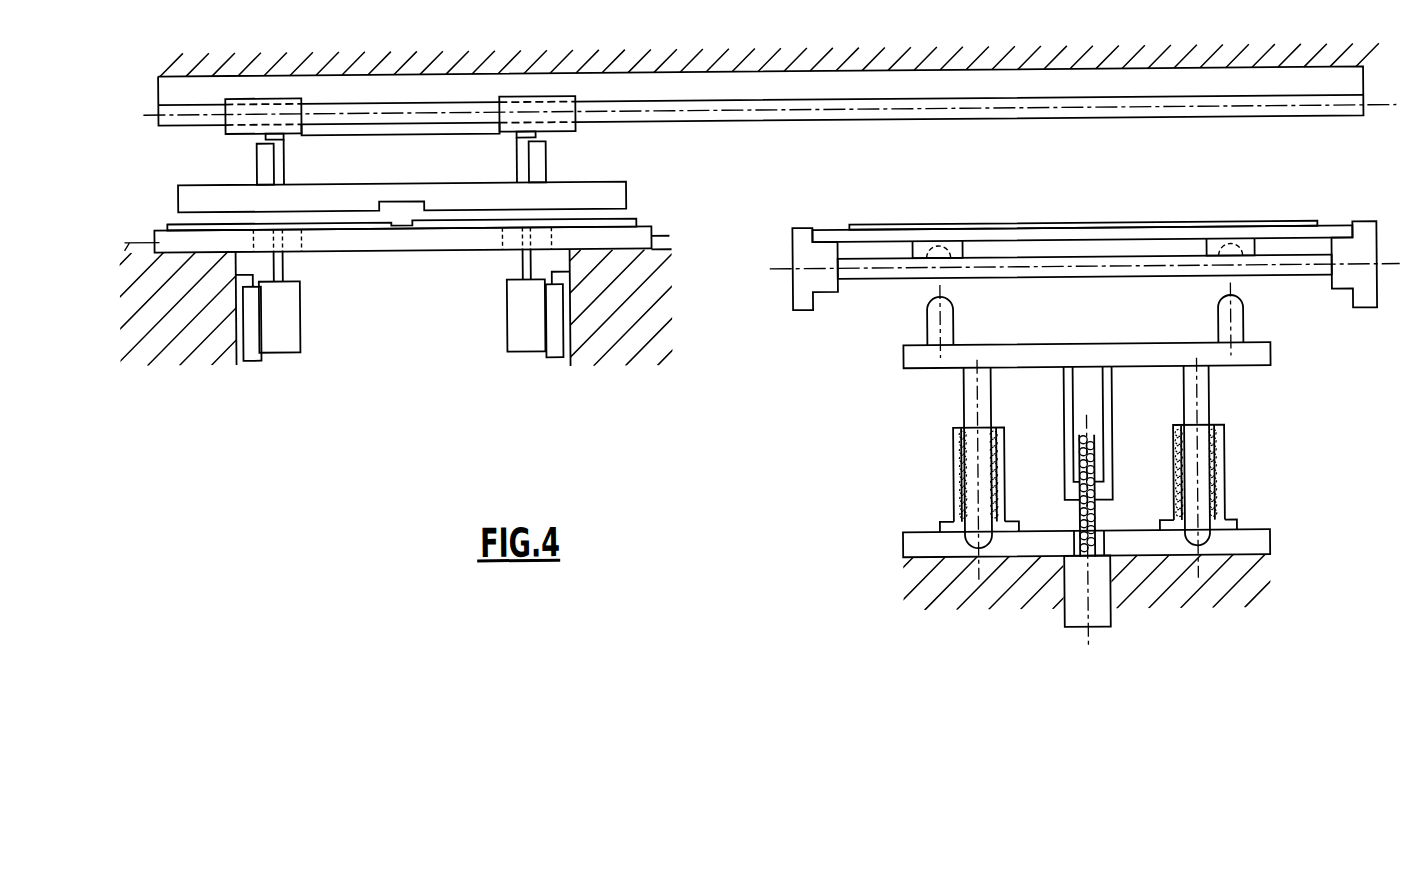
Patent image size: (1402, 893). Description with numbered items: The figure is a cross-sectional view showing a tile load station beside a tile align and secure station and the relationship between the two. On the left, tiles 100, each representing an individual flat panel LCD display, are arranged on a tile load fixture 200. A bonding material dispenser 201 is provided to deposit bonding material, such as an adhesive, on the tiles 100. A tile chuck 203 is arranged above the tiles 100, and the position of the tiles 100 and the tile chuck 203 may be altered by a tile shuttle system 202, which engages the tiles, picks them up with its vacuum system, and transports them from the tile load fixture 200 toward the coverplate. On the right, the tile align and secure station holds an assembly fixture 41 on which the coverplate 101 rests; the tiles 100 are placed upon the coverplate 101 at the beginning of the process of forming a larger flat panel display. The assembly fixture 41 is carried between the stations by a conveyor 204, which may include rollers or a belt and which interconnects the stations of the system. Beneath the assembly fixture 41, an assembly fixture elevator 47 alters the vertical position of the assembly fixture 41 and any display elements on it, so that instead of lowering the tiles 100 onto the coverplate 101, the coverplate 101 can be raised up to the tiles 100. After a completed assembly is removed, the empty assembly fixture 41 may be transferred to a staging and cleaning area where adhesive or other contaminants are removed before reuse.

The tile shuttle system 202 is at (526, 96).
The tile chuck 203 is at (178, 188).
The tile 100 is at (170, 223).
The tile load fixture 200 is at (160, 241).
The bonding material dispenser 201 is at (507, 331).
The coverplate 101 is at (1267, 226).
The assembly fixture 41 is at (1280, 247).
The conveyor 204 is at (803, 311).
The assembly fixture elevator 47 is at (952, 472).